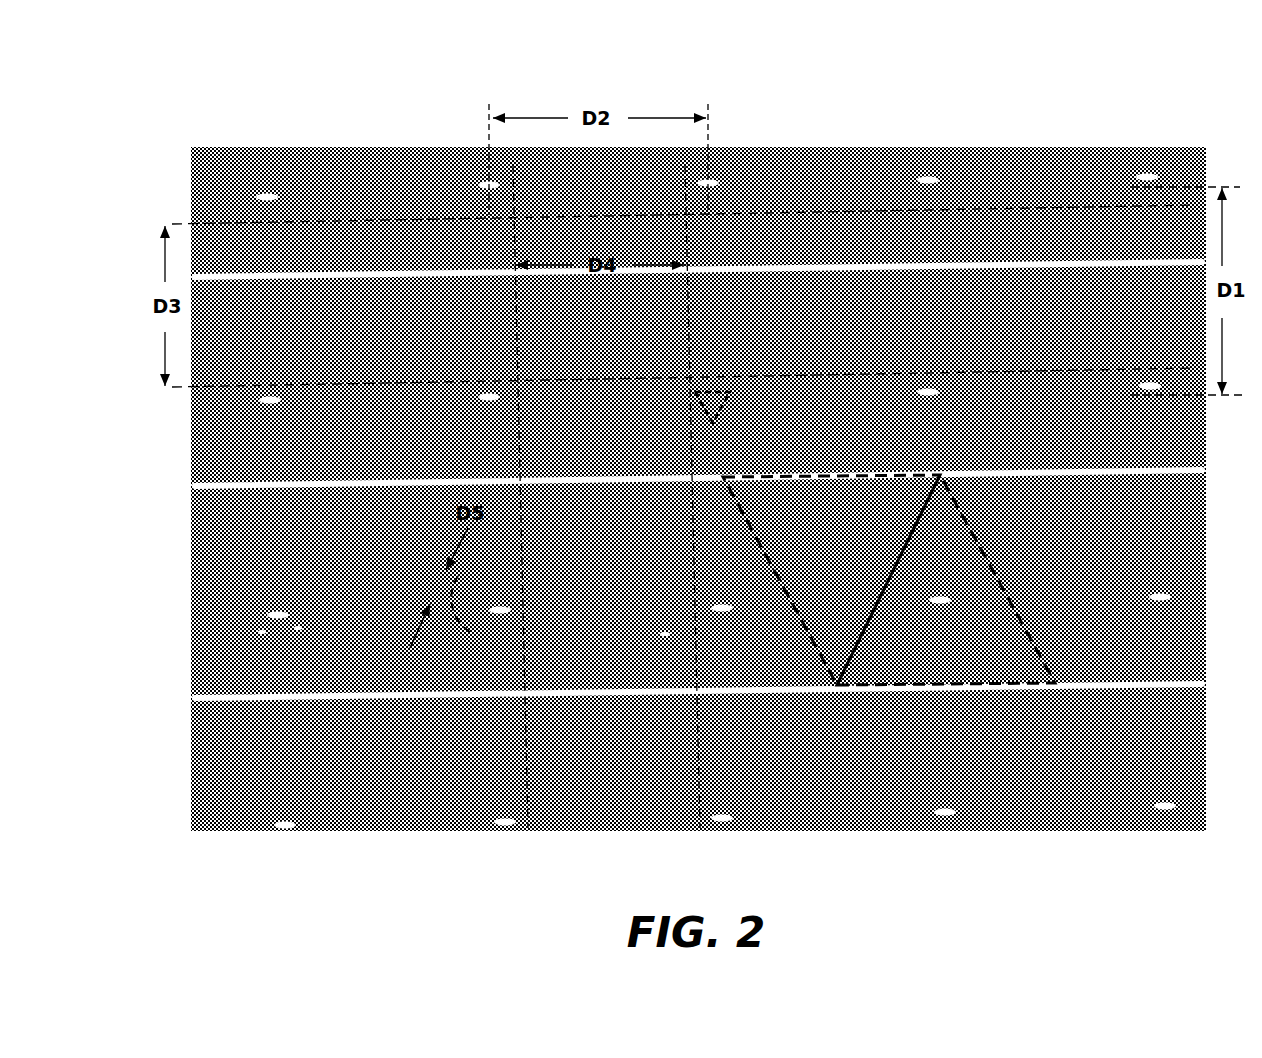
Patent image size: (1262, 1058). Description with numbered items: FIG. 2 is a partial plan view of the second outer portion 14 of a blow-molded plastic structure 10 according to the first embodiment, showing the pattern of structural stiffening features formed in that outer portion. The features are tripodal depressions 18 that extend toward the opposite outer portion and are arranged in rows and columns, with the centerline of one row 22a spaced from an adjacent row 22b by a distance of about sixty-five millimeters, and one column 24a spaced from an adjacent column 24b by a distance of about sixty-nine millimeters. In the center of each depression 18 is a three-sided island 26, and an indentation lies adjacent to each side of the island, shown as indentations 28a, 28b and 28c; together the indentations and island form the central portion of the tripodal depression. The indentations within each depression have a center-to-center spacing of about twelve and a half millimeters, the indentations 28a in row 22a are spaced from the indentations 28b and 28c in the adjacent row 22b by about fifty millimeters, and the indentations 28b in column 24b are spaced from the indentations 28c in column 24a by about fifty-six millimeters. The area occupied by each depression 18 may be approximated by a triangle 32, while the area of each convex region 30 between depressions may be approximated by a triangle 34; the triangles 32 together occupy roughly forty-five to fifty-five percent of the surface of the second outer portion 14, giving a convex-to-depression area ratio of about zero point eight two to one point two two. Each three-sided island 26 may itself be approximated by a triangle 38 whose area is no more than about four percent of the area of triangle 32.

The blow-molded plastic structure 10 is at (1021, 107).
The second outer portion 14 is at (1067, 790).
The tripodal depression 18 is at (665, 638).
The row 22a is at (182, 415).
The adjacent row 22b is at (182, 206).
The column 24a is at (489, 90).
The adjacent column 24b is at (708, 90).
The three-sided island 26 is at (723, 613).
The indentation 28a is at (278, 606).
The indentation 28b is at (262, 635).
The indentation 28c is at (298, 631).
The convex region 30 is at (1043, 512).
The triangle 32 is at (930, 669).
The triangle 34 is at (818, 514).
The triangle 38 is at (731, 397).